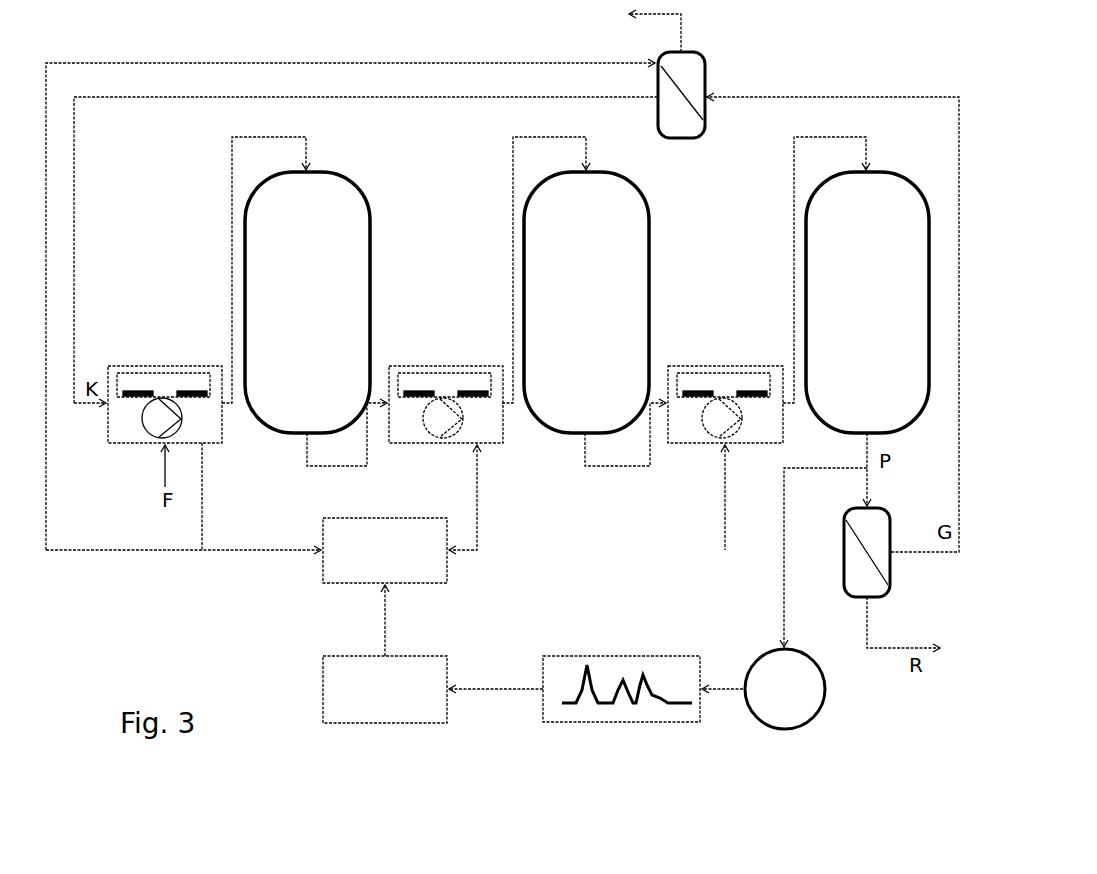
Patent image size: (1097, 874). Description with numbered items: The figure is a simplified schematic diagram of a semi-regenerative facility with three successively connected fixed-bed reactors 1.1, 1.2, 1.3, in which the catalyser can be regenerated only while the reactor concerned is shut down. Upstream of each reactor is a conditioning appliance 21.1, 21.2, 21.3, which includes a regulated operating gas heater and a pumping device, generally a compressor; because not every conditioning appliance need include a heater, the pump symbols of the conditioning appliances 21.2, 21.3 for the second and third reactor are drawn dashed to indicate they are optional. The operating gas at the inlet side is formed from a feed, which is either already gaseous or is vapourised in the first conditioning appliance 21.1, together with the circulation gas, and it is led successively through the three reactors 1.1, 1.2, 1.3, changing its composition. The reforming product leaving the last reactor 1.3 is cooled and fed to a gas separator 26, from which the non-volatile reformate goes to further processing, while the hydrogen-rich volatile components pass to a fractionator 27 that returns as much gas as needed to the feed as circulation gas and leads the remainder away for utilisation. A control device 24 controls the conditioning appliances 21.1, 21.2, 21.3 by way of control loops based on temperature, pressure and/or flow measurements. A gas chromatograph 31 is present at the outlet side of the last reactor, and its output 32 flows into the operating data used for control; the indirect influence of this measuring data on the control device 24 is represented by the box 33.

The first fixed-bed reactor 1.1 is at (389, 247).
The second fixed-bed reactor 1.2 is at (666, 248).
The third fixed-bed reactor 1.3 is at (916, 168).
The first conditioning appliance 21.1 is at (122, 420).
The second conditioning appliance 21.2 is at (418, 413).
The third conditioning appliance 21.3 is at (692, 425).
The control device 24 is at (347, 558).
The gas separator 26 is at (879, 585).
The fractionator 27 is at (691, 73).
The gas chromatograph 31 is at (797, 707).
The output of the gas chromatograph 32 is at (560, 693).
The box representing influence of measuring data 33 is at (350, 707).